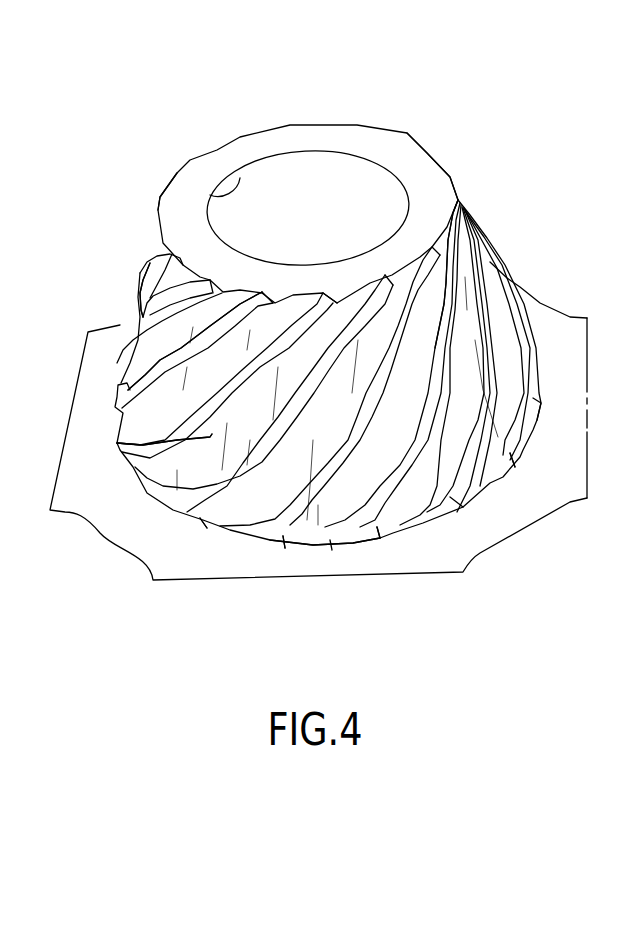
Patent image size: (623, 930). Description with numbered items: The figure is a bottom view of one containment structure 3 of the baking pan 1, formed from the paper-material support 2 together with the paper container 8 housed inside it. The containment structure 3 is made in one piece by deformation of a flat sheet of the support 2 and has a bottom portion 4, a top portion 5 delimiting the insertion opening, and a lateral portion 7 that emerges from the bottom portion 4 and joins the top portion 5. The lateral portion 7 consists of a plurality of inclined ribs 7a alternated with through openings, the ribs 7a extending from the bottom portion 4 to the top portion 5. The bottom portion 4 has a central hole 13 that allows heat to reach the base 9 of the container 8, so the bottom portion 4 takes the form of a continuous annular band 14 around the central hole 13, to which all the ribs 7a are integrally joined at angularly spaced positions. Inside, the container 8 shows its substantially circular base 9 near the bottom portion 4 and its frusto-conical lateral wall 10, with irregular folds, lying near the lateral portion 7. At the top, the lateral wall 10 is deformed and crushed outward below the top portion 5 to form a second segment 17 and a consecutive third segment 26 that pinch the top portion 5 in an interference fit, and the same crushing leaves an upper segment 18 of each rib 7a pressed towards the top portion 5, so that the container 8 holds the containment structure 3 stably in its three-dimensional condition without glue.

The baking pan 1 is at (128, 112).
The support 2 is at (92, 526).
The containment structure 3 is at (137, 309).
The bottom portion 4 is at (443, 160).
The top portion 5 is at (330, 543).
The lateral portion 7 is at (399, 548).
The ribs 7a is at (453, 290).
The container 8 is at (144, 350).
The base 9 is at (313, 183).
The lateral wall 10 is at (117, 443).
The central hole 13 is at (240, 178).
The continuous annular band 14 is at (380, 147).
The second segment 17 is at (505, 470).
The upper segment 18 is at (203, 517).
The third segment 26 is at (527, 443).